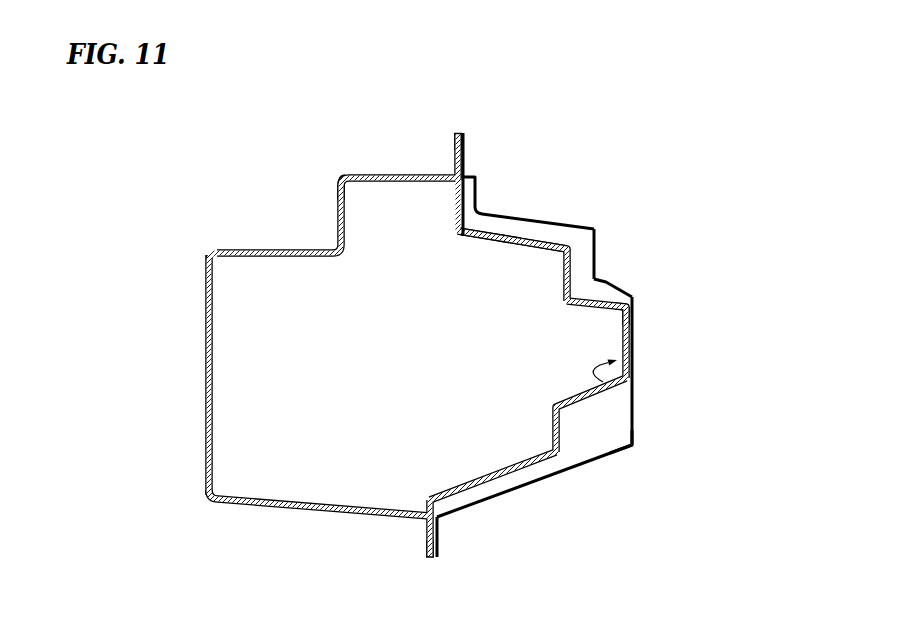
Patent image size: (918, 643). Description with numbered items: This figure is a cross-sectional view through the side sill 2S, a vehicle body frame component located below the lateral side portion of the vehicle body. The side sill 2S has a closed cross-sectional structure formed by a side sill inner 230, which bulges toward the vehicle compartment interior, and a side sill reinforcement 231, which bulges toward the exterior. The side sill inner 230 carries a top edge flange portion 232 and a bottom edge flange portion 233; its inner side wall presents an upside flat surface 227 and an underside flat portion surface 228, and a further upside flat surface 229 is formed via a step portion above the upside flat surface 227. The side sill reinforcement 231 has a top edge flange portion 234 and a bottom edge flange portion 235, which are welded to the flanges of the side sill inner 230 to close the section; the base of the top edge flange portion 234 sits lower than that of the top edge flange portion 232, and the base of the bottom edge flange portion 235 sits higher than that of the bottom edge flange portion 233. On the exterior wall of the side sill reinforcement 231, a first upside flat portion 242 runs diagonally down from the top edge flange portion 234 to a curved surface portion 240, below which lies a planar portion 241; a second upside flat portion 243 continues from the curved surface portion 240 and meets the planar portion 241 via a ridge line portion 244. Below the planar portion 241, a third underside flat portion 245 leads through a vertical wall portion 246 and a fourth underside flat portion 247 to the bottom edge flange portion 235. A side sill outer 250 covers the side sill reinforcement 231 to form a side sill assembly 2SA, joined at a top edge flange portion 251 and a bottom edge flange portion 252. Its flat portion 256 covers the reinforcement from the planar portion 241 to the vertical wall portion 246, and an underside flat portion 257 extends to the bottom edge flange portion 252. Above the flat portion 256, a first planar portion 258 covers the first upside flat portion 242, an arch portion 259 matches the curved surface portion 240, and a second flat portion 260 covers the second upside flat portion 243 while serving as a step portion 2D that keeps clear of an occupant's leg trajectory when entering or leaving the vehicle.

The upside flat surface 227 is at (250, 248).
The underside flat portion surface 228 is at (262, 506).
The upside flat surface 229 is at (365, 173).
The side sill inner 230 is at (205, 383).
The side sill reinforcement 231 is at (628, 375).
The top edge flange portion 232 is at (452, 150).
The bottom edge flange portion 233 is at (426, 533).
The top edge flange portion 234 is at (457, 132).
The bottom edge flange portion 235 is at (432, 560).
The curved surface portion 240 is at (571, 267).
The planar portion 241 is at (630, 348).
The first upside flat portion 242 is at (543, 238).
The second upside flat portion 243 is at (603, 300).
The ridge line portion 244 is at (631, 304).
The third underside flat portion 245 is at (636, 446).
The vertical wall portion 246 is at (603, 394).
The fourth underside flat portion 247 is at (518, 470).
The side sill outer 250 is at (598, 228).
The top edge flange portion 251 is at (466, 143).
The bottom edge flange portion 252 is at (438, 543).
The flat portion 256 is at (636, 404).
The underside flat portion 257 is at (583, 467).
The first planar portion 258 is at (536, 213).
The arch portion 259 is at (600, 272).
The second flat portion 260 is at (607, 287).
The side sill 2S is at (499, 233).
The side sill assembly 2SA is at (575, 165).
The step portion 2D is at (610, 236).